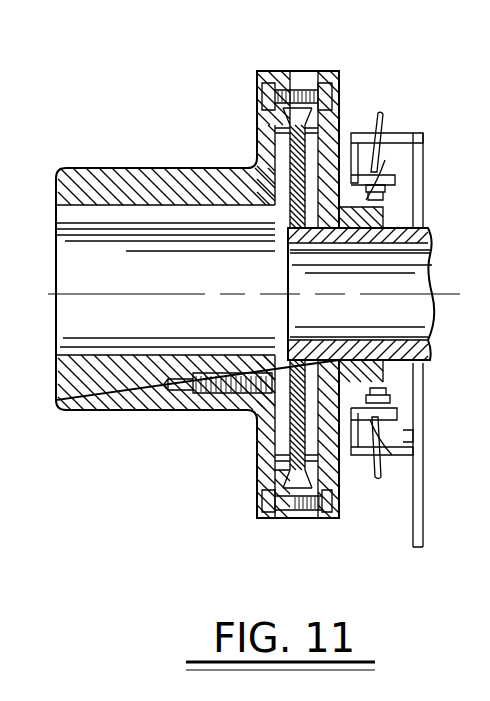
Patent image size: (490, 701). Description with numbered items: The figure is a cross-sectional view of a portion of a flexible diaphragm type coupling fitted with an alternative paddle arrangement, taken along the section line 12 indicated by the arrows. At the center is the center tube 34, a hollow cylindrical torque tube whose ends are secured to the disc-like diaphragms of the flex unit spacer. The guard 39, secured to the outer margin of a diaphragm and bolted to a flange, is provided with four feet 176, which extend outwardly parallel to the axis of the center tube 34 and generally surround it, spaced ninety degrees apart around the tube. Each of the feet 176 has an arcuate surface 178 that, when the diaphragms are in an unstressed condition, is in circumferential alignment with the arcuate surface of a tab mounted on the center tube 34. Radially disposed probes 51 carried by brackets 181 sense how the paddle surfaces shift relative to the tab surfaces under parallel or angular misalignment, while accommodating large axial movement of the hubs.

The section line 12 is at (402, 32).
The center tube 34 is at (413, 378).
The guard 39 is at (339, 125).
The probe 51 is at (388, 138).
The foot 176 is at (383, 207).
The arcuate surface 178 is at (372, 190).
The bracket 181 is at (385, 132).